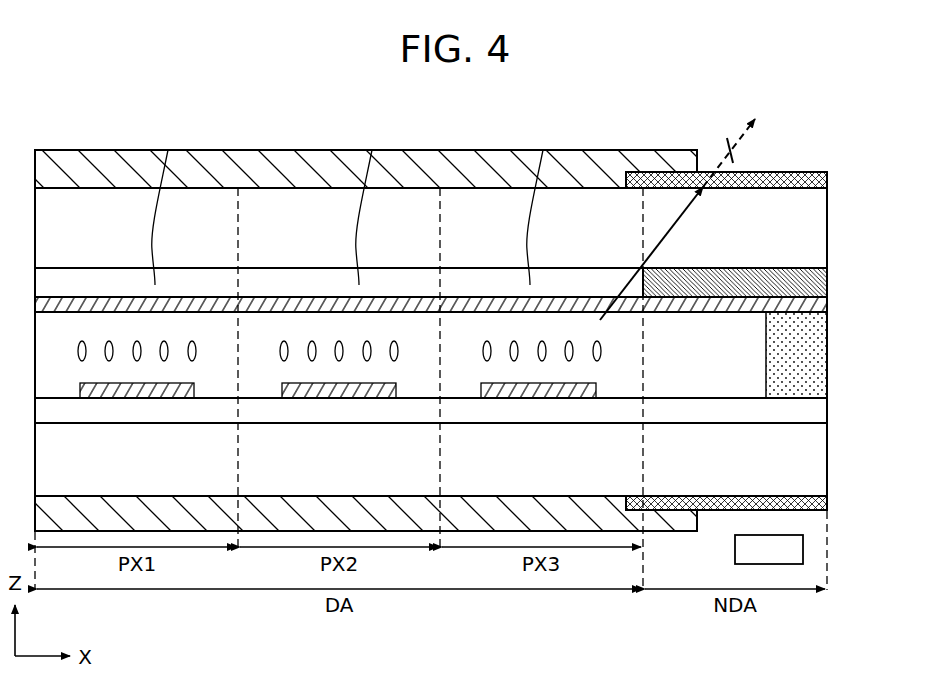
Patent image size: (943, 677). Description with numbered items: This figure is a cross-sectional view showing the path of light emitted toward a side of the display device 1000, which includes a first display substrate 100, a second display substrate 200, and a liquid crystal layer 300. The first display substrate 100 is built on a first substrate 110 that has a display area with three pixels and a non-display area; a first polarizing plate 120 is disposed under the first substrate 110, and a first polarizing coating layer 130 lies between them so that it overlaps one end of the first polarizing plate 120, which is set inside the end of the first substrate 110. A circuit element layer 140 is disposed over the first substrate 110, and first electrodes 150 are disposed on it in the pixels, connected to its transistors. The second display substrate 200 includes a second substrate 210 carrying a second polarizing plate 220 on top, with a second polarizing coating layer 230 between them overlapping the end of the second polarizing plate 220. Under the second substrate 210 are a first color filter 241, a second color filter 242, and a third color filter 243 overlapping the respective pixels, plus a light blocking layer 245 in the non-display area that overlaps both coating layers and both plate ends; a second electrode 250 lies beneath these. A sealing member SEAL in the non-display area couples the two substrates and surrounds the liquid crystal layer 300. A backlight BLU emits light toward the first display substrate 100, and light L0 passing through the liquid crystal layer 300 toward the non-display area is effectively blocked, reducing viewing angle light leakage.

The display device 1000 is at (838, 154).
The second display substrate 200 is at (485, 207).
The second polarizing plate 220 is at (627, 162).
The second polarizing coating layer 230 is at (830, 181).
The second substrate 210 is at (829, 218).
The first color filter 241 is at (168, 150).
The second color filter 242 is at (372, 150).
The third color filter 243 is at (543, 150).
The light blocking layer 245 is at (829, 277).
The second electrode 250 is at (462, 299).
The liquid crystal layer 300 is at (633, 345).
The sealing member SEAL is at (822, 349).
The first electrodes 150 is at (598, 378).
The first display substrate 100 is at (485, 450).
The circuit element layer 140 is at (822, 420).
The first substrate 110 is at (822, 453).
The first polarizing coating layer 130 is at (829, 503).
The first polarizing plate 120 is at (688, 520).
The backlight BLU is at (803, 548).
The light L0 is at (677, 219).